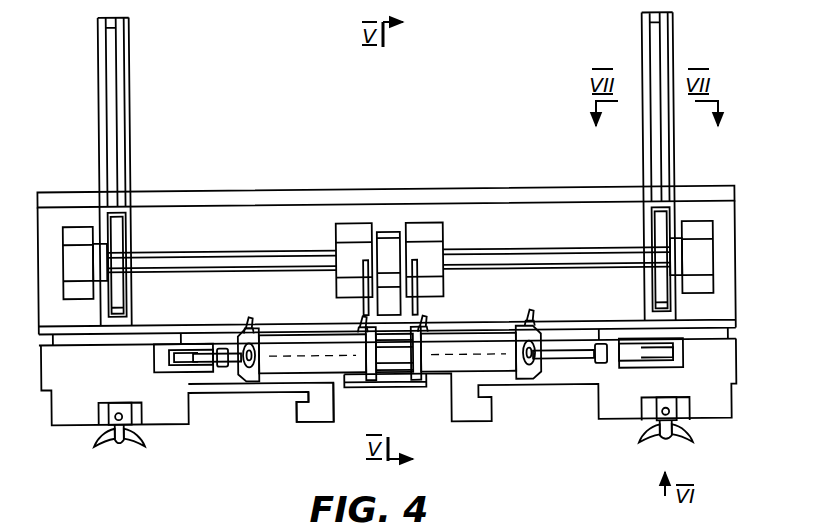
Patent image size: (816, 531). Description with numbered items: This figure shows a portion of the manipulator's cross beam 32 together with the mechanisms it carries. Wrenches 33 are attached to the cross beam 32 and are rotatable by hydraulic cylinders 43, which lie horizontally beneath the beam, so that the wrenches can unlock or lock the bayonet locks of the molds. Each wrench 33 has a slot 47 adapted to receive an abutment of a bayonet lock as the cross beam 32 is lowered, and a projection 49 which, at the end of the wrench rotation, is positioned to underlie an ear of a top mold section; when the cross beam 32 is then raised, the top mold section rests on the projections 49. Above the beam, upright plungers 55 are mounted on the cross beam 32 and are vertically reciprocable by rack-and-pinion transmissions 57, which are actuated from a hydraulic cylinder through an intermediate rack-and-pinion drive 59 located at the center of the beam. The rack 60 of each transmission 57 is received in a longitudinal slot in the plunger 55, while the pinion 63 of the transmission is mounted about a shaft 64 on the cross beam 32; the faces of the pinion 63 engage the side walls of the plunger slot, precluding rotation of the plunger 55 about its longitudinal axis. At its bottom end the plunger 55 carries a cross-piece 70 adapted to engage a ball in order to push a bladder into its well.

The cross beam 32 is at (263, 214).
The wrenches 33 is at (159, 413).
The hydraulic cylinders 43 is at (283, 359).
The slots 47 is at (130, 398).
The projections 49 is at (303, 407).
The plungers 55 is at (129, 53).
The rack-and-pinion transmissions 57 is at (159, 242).
The intermediate rack-and-pinion drive 59 is at (393, 221).
The rack 60 is at (118, 92).
The pinion 63 is at (116, 241).
The shaft 64 is at (476, 253).
The cross-piece 70 is at (115, 444).